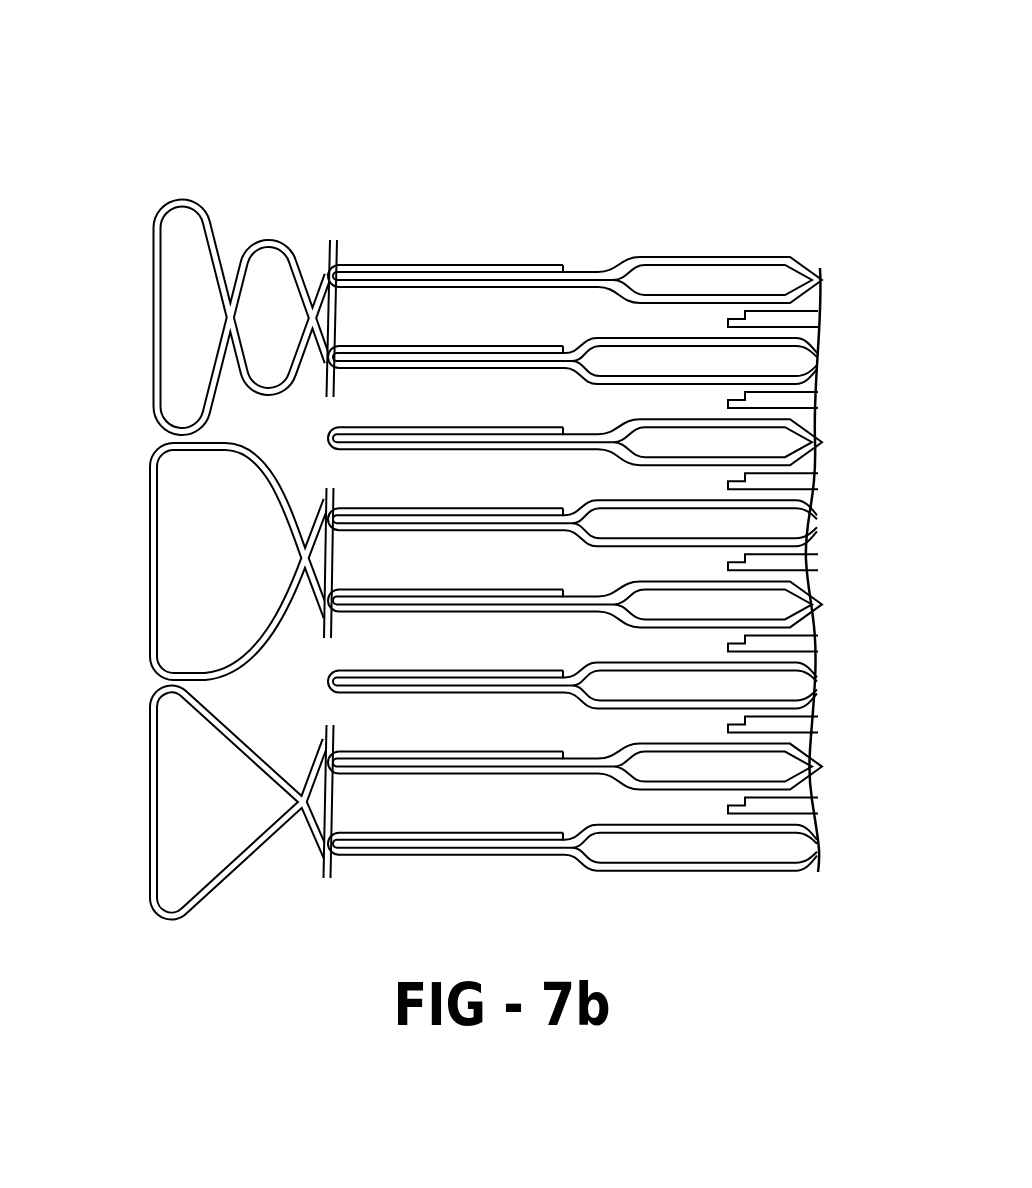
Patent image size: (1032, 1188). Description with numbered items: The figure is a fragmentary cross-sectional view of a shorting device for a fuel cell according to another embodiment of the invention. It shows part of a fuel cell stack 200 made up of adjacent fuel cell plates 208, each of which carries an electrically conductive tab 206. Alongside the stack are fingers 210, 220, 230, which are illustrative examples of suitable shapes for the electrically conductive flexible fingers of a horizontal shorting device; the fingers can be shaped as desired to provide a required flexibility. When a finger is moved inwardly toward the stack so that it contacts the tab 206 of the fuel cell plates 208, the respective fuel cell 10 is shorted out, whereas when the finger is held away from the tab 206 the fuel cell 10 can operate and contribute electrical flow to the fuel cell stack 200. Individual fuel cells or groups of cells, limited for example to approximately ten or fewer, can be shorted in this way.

The fuel cell stack 200 is at (533, 124).
The electrically conductive tab 206 is at (342, 264).
The fuel cell plate 208 is at (690, 262).
The finger 210 is at (152, 342).
The finger 220 is at (152, 585).
The finger 230 is at (152, 822).
The fuel cell 10 is at (830, 255).